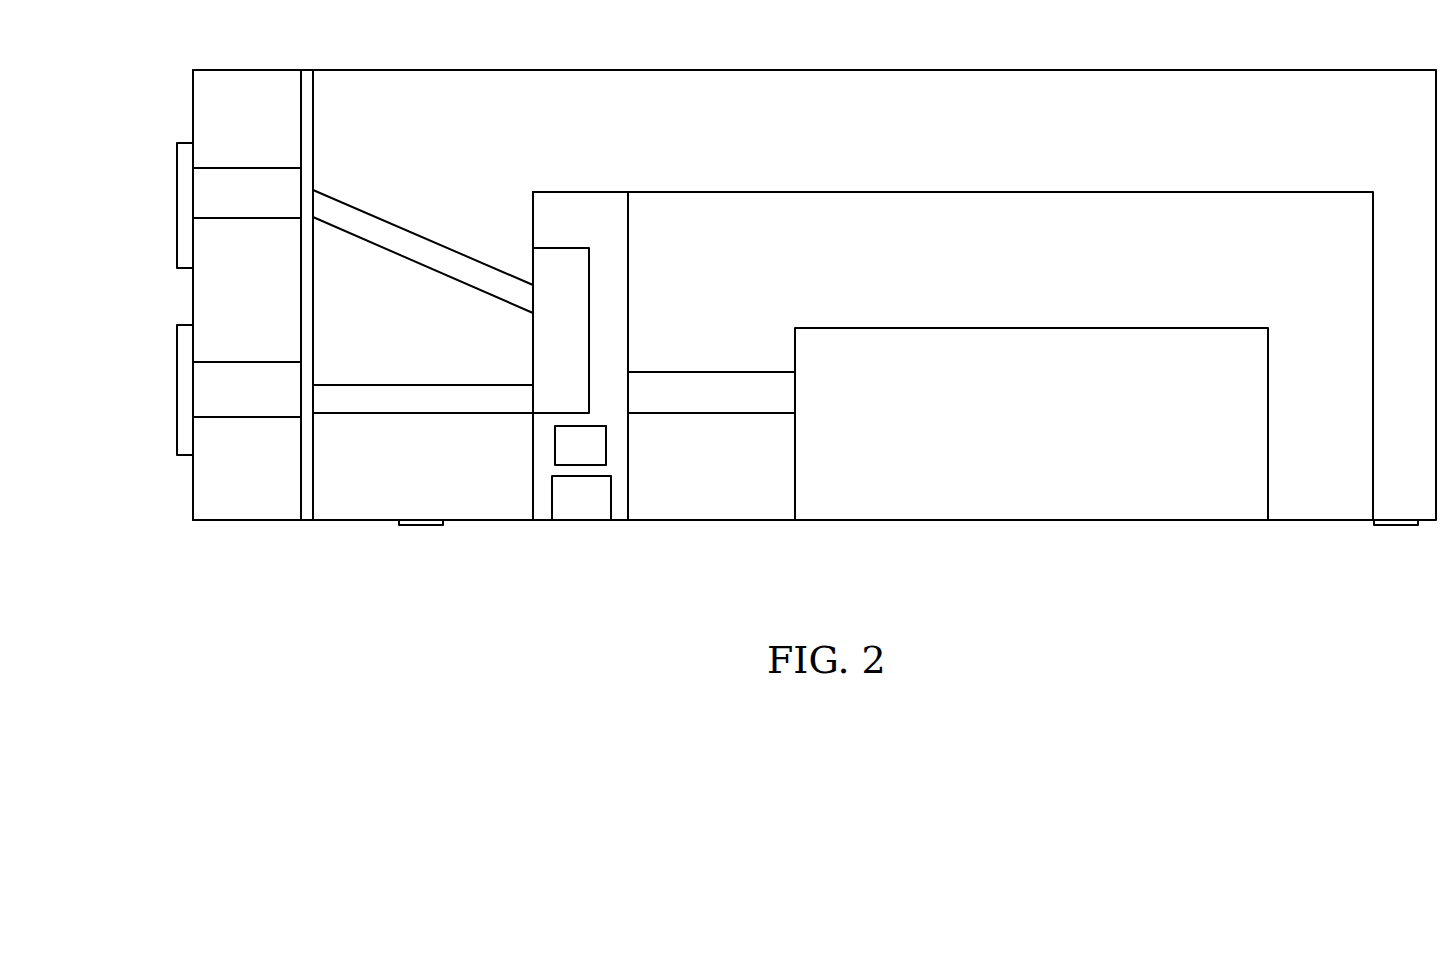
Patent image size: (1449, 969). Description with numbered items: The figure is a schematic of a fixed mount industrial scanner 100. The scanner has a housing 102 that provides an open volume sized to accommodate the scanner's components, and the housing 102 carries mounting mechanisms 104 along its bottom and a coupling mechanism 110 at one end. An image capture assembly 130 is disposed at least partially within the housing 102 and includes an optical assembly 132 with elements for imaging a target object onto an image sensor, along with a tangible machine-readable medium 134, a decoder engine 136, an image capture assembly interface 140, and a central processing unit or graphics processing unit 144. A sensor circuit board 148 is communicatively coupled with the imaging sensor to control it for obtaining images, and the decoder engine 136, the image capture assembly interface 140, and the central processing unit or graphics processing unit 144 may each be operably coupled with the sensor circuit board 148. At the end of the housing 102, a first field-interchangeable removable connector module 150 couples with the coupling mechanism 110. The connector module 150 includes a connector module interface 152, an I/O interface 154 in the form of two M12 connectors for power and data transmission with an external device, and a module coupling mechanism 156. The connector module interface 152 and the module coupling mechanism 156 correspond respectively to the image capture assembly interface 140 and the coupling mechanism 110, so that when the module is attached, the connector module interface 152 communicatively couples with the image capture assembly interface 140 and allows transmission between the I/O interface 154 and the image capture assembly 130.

The fixed mount industrial scanner 100 is at (1372, 601).
The housing 102 is at (1275, 68).
The mounting mechanisms 104 is at (423, 526).
The coupling mechanism 110 is at (308, 75).
The image capture assembly 130 is at (953, 191).
The optical assembly 132 is at (1032, 327).
The tangible machine-readable medium 134 is at (573, 283).
The decoder engine 136 is at (577, 503).
The image capture assembly interface 140 is at (332, 193).
The central processing unit or graphics processing unit 144 is at (595, 444).
The sensor circuit board 148 is at (616, 256).
The first field-interchangeable removable connector module 150 is at (247, 298).
The connector module interface 152 is at (263, 182).
The I/O interface 154 is at (185, 208).
The module coupling mechanism 156 is at (307, 521).